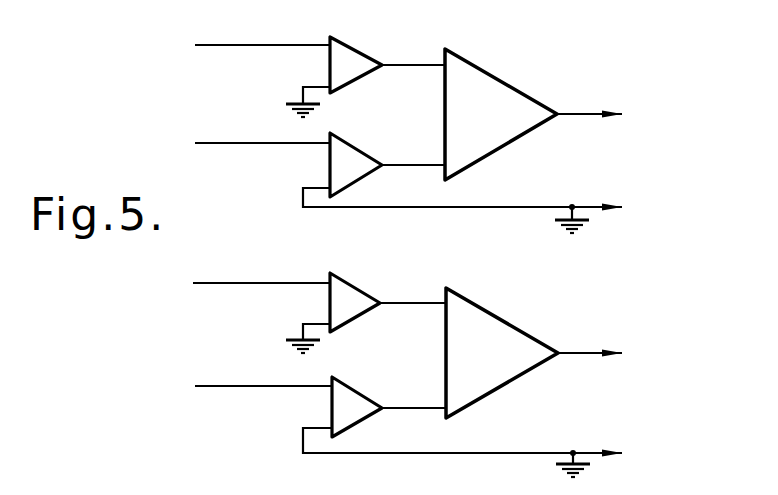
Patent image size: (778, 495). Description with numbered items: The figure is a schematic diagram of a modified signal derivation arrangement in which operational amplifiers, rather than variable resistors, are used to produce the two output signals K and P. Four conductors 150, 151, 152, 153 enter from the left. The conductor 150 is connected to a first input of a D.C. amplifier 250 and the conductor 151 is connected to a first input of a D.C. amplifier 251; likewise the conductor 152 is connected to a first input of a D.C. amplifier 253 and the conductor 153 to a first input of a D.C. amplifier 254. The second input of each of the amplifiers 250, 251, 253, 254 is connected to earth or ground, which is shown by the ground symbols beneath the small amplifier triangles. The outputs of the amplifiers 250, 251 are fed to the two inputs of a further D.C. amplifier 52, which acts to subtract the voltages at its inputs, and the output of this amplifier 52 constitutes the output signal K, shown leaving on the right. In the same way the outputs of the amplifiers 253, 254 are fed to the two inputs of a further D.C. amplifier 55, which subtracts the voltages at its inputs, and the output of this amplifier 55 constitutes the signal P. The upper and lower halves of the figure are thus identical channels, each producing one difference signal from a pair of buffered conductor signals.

The conductor 150 is at (261, 30).
The conductor 151 is at (261, 129).
The conductor 152 is at (261, 268).
The conductor 153 is at (262, 372).
The D.C. amplifier 250 is at (345, 70).
The D.C. amplifier 251 is at (345, 160).
The D.C. amplifier 253 is at (343, 300).
The D.C. amplifier 254 is at (348, 407).
The differential amplifier producing output K 52 is at (488, 97).
The further D.C. amplifier 55 is at (493, 355).